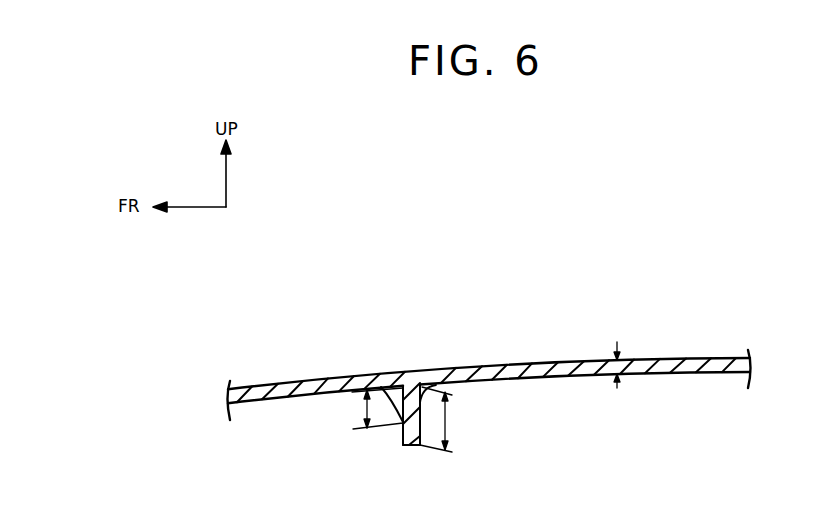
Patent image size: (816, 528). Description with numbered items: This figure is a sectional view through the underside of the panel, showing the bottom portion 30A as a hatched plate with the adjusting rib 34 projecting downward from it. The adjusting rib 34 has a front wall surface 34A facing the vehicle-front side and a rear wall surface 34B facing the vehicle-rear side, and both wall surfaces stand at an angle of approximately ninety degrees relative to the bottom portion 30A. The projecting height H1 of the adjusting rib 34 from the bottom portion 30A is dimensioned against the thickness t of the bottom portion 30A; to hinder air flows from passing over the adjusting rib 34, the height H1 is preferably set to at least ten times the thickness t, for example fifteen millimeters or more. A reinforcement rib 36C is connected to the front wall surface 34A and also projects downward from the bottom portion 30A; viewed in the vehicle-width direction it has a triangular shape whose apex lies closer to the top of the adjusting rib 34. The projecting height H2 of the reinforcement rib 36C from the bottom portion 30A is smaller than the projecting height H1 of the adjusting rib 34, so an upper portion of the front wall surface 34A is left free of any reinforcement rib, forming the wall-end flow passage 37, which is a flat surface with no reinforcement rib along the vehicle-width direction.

The bottom portion 30A is at (549, 377).
The adjusting rib 34 is at (407, 447).
The front wall surface 34A is at (397, 384).
The rear wall surface 34B is at (432, 382).
The reinforcement rib 36C is at (388, 384).
The wall-end flow passage 37 is at (395, 440).
The projecting height of the adjusting rib H1 is at (448, 411).
The projecting height of the reinforcement rib H2 is at (360, 409).
The thickness of the bottom portion t is at (613, 362).